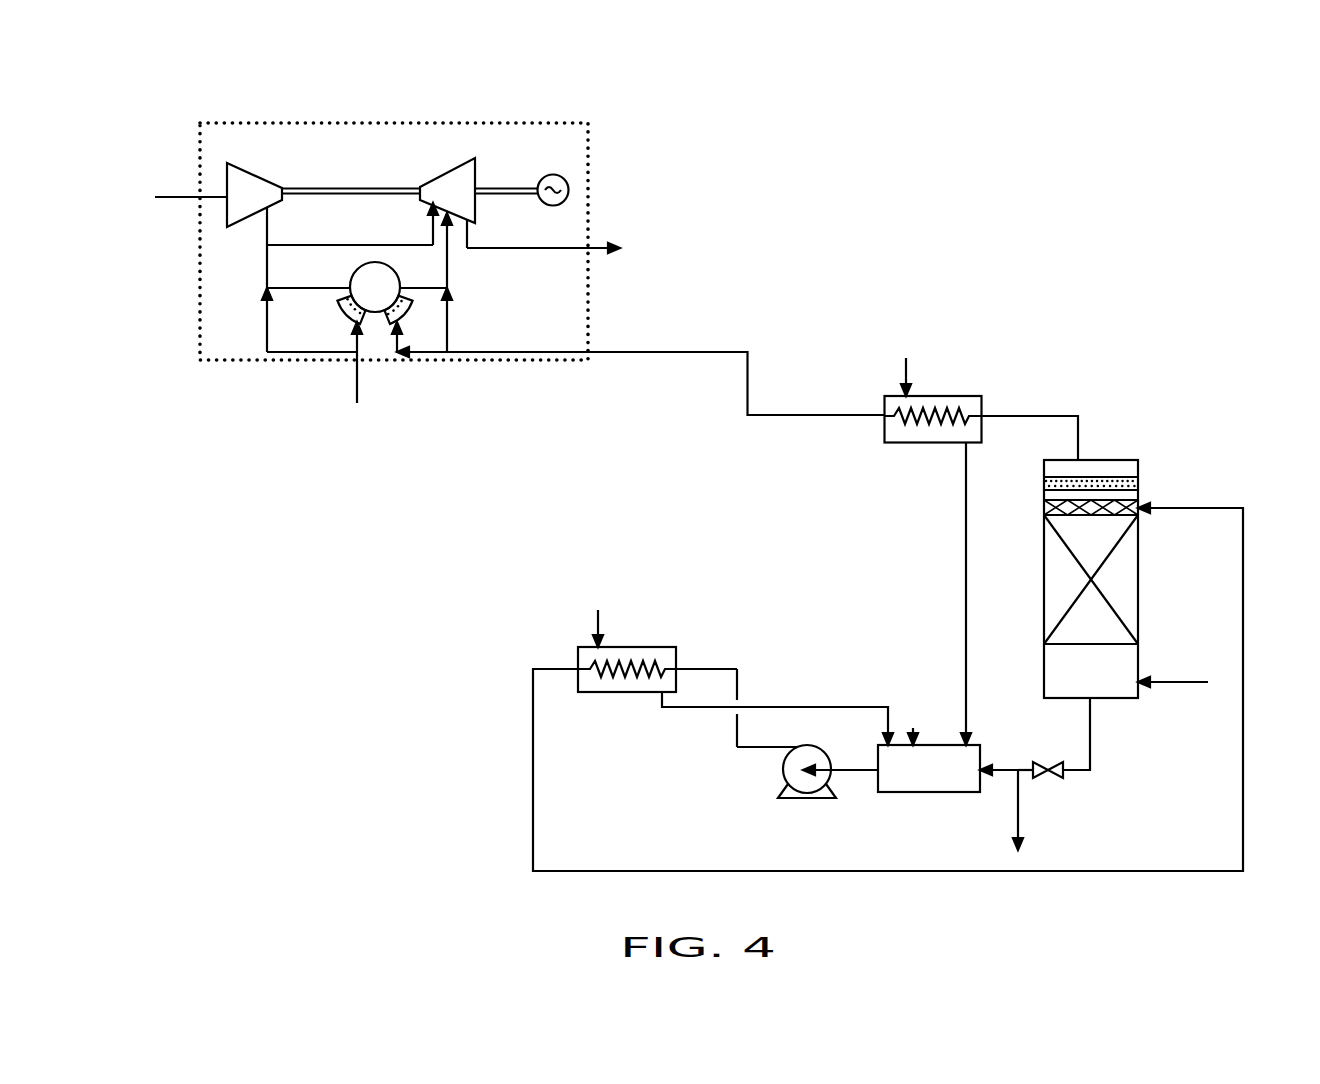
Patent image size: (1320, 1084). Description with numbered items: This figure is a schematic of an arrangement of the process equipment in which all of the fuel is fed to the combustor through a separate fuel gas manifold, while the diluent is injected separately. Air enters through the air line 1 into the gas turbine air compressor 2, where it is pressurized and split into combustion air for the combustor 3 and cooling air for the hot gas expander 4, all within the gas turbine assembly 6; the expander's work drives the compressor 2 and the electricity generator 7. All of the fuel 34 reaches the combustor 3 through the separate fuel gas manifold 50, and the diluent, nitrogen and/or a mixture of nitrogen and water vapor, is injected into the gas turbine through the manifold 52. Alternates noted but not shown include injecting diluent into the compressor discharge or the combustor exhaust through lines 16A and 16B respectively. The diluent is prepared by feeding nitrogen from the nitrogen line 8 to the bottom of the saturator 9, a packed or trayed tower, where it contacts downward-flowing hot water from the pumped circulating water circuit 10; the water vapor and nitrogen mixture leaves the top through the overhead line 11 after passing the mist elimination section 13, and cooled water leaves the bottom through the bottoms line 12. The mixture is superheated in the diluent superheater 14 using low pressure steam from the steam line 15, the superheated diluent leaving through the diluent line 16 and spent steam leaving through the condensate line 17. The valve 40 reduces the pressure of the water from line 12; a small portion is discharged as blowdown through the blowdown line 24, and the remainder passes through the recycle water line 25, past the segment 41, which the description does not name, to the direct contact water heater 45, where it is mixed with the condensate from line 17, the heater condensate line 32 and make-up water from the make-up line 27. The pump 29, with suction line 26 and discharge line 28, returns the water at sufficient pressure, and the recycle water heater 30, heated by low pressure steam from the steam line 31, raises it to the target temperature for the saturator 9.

The air line 1 is at (168, 190).
The gas turbine air compressor 2 is at (252, 173).
The combustor 3 is at (398, 273).
The hot gas expander 4 is at (480, 172).
The gas turbine assembly 6 is at (422, 117).
The electricity generator 7 is at (552, 173).
The nitrogen line 8 is at (1162, 672).
The saturator 9 is at (1147, 582).
The pumped circulating water circuit 10 is at (1252, 643).
The saturator overhead line 11 is at (1097, 439).
The saturator bottoms water line 12 is at (1097, 737).
The mist elimination section 13 is at (1145, 479).
The diluent superheater 14 is at (952, 389).
The low pressure steam line 15 is at (900, 360).
The superheated diluent line 16 is at (804, 412).
The diluent injection line to compressor discharge 16A is at (265, 338).
The diluent injection line to combustor exhaust 16B is at (452, 325).
The steam condensate line 17 is at (973, 489).
The blowdown line 24 is at (1025, 818).
The recycle water line 25 is at (1007, 760).
The suction line 26 is at (863, 777).
The make-up water line 27 is at (912, 712).
The discharge line 28 is at (747, 748).
The pump 29 is at (832, 730).
The recycle water heater 30 is at (643, 645).
The low pressure steam line 31 is at (592, 620).
The recycle water heater condensate line 32 is at (775, 700).
The fuel 34 is at (357, 366).
The valve 40 is at (1063, 782).
The valve outlet line 41 is at (1028, 763).
The direct contact water heater 45 is at (915, 797).
The separate fuel gas manifold 50 is at (350, 317).
The diluent manifold 52 is at (410, 305).